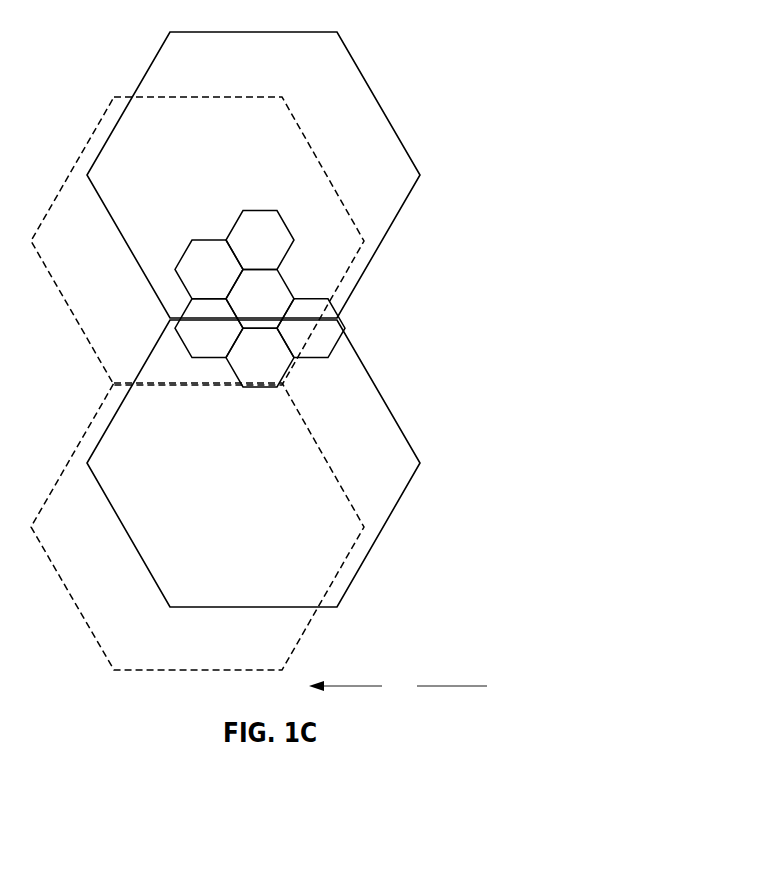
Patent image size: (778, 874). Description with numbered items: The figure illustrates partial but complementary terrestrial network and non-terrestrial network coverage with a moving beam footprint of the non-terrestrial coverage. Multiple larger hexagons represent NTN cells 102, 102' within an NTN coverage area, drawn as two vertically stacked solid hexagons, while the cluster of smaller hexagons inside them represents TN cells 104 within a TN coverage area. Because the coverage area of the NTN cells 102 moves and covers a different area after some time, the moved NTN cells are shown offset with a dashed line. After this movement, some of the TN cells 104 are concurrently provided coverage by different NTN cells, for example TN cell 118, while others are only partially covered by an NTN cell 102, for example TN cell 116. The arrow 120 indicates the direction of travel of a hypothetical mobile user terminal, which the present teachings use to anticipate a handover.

The NTN cell 102 is at (320, 175).
The NTN cell 102' is at (284, 463).
The TN cells 104 is at (313, 200).
The TN cell 116 is at (348, 364).
The TN cell 118 is at (386, 331).
The arrow 120 is at (398, 687).